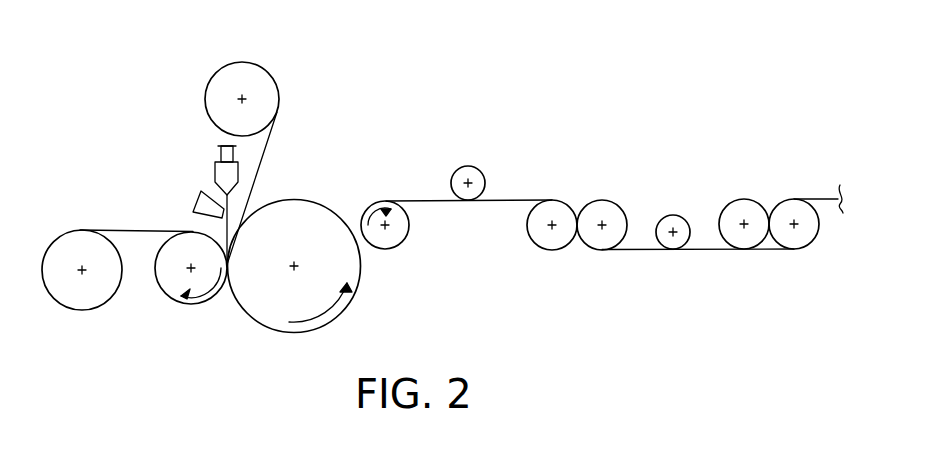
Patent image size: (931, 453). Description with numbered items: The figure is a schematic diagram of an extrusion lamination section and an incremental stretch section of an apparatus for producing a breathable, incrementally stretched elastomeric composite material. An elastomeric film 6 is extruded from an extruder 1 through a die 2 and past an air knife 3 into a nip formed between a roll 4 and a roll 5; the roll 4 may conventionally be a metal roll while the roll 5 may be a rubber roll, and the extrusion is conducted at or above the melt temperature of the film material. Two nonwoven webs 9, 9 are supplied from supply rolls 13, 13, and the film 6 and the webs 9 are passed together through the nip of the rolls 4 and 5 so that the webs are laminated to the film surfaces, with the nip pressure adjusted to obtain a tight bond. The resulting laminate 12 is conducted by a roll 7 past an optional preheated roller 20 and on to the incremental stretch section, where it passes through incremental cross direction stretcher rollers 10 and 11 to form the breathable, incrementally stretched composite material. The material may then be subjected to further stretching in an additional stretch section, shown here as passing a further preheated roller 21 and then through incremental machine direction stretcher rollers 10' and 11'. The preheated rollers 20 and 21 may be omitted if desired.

The extruder 1 is at (220, 152).
The die 2 is at (215, 170).
The air knife 3 is at (201, 200).
The roll 4 is at (322, 213).
The roll 5 is at (167, 287).
The elastomeric film 6 is at (224, 229).
The roll 7 is at (402, 233).
The nonwoven web 9 is at (108, 230).
The incremental cross direction stretcher roller 10 is at (535, 239).
The incremental cross direction stretcher roller 11 is at (685, 210).
The laminate 12 is at (415, 198).
The roll 13 is at (63, 243).
The preheated roller 20 is at (468, 168).
The preheated roller 21 is at (680, 216).
The incremental machine direction stretcher roller 10' is at (744, 197).
The incremental machine direction stretcher roller 11' is at (814, 227).